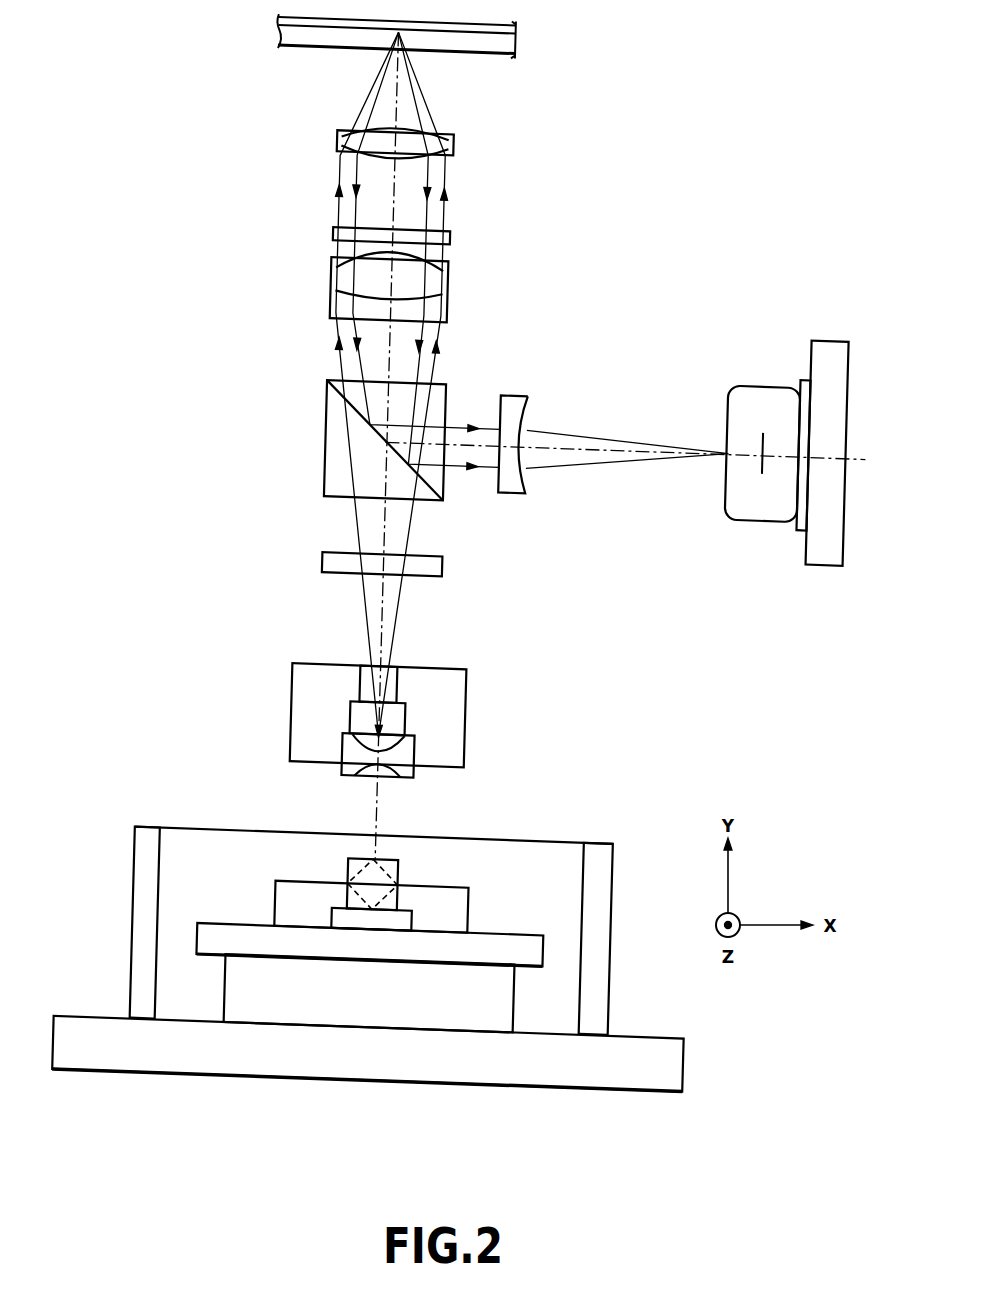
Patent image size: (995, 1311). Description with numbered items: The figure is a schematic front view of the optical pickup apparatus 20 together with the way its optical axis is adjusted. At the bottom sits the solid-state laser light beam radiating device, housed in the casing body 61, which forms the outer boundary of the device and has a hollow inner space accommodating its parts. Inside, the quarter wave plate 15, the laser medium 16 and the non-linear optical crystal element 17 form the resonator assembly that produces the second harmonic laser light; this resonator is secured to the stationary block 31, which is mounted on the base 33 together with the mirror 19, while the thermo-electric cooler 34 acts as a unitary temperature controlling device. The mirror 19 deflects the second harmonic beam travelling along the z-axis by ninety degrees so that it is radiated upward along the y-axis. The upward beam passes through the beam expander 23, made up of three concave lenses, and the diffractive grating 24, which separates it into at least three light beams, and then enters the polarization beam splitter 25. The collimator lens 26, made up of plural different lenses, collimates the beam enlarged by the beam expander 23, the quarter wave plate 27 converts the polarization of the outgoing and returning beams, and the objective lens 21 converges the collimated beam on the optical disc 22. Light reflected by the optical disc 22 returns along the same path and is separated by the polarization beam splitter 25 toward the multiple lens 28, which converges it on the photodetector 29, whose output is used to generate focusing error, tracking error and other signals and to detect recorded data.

The quarter wave plate 15 is at (300, 848).
The laser medium 16 is at (300, 848).
The non-linear optical crystal element 17 is at (300, 848).
The mirror 19 is at (323, 845).
The optical pickup apparatus 20 is at (633, 247).
The objective lens 21 is at (342, 126).
The optical disc 22 is at (498, 34).
The beam expander 23 is at (375, 744).
The diffractive grating 24 is at (344, 545).
The polarization beam splitter 25 is at (349, 439).
The collimator lens 26 is at (343, 294).
The quarter wave plate 27 is at (339, 220).
The multiple lens 28 is at (527, 377).
The photodetector 29 is at (749, 368).
The stationary block 31 is at (471, 882).
The base 33 is at (556, 931).
The thermo-electric cooler 34 is at (522, 989).
The casing body 61 is at (625, 841).